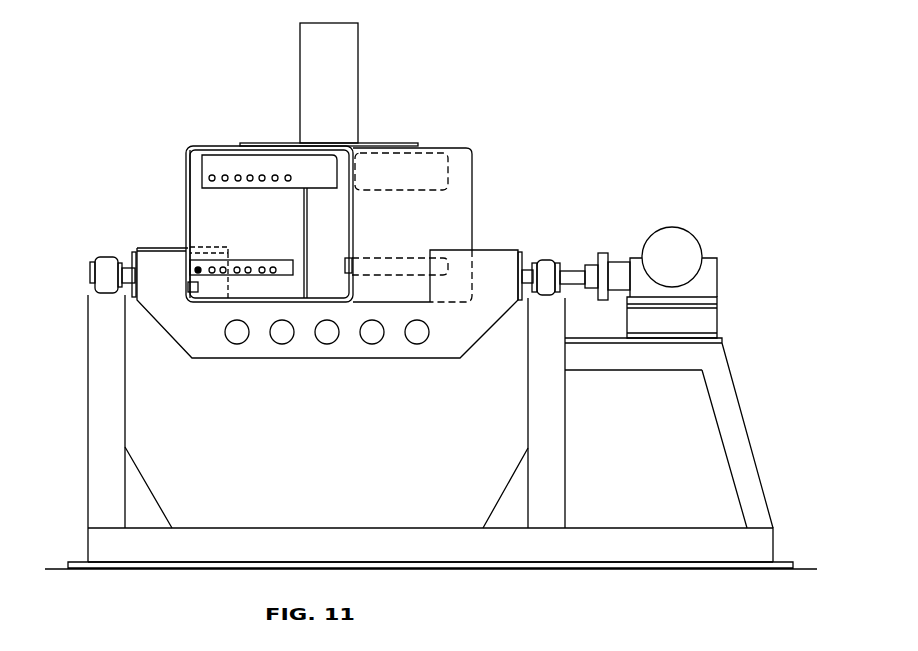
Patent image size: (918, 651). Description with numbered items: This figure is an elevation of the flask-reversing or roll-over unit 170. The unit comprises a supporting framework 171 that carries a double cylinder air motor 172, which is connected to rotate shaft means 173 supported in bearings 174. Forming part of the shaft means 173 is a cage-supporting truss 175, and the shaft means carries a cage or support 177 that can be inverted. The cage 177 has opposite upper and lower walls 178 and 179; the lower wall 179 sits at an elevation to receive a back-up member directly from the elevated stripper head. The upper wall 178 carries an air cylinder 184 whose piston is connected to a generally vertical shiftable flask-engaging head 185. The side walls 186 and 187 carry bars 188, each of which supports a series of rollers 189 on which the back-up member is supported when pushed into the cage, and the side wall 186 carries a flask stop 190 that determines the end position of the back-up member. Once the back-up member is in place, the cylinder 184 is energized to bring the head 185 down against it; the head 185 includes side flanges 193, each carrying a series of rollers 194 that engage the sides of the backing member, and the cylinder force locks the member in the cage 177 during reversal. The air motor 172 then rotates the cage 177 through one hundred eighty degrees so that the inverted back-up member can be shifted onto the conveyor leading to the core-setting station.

The roll-over unit 170 is at (550, 150).
The supporting framework 171 is at (82, 413).
The double cylinder air motor 172 is at (679, 222).
The shaft means 173 is at (133, 253).
The bearings 174 is at (106, 257).
The cage-supporting truss 175 is at (405, 356).
The cage or support 177 is at (478, 153).
The upper wall 178 is at (207, 146).
The lower wall 179 is at (302, 302).
The air cylinder 184 is at (352, 79).
The flask-engaging head 185 is at (272, 144).
The side wall 186 is at (186, 214).
The side wall 187 is at (463, 214).
The bars 188 is at (345, 261).
The rollers 189 is at (262, 266).
The flask stop 190 is at (190, 293).
The side flanges 193 is at (202, 165).
The rollers 194 is at (250, 181).